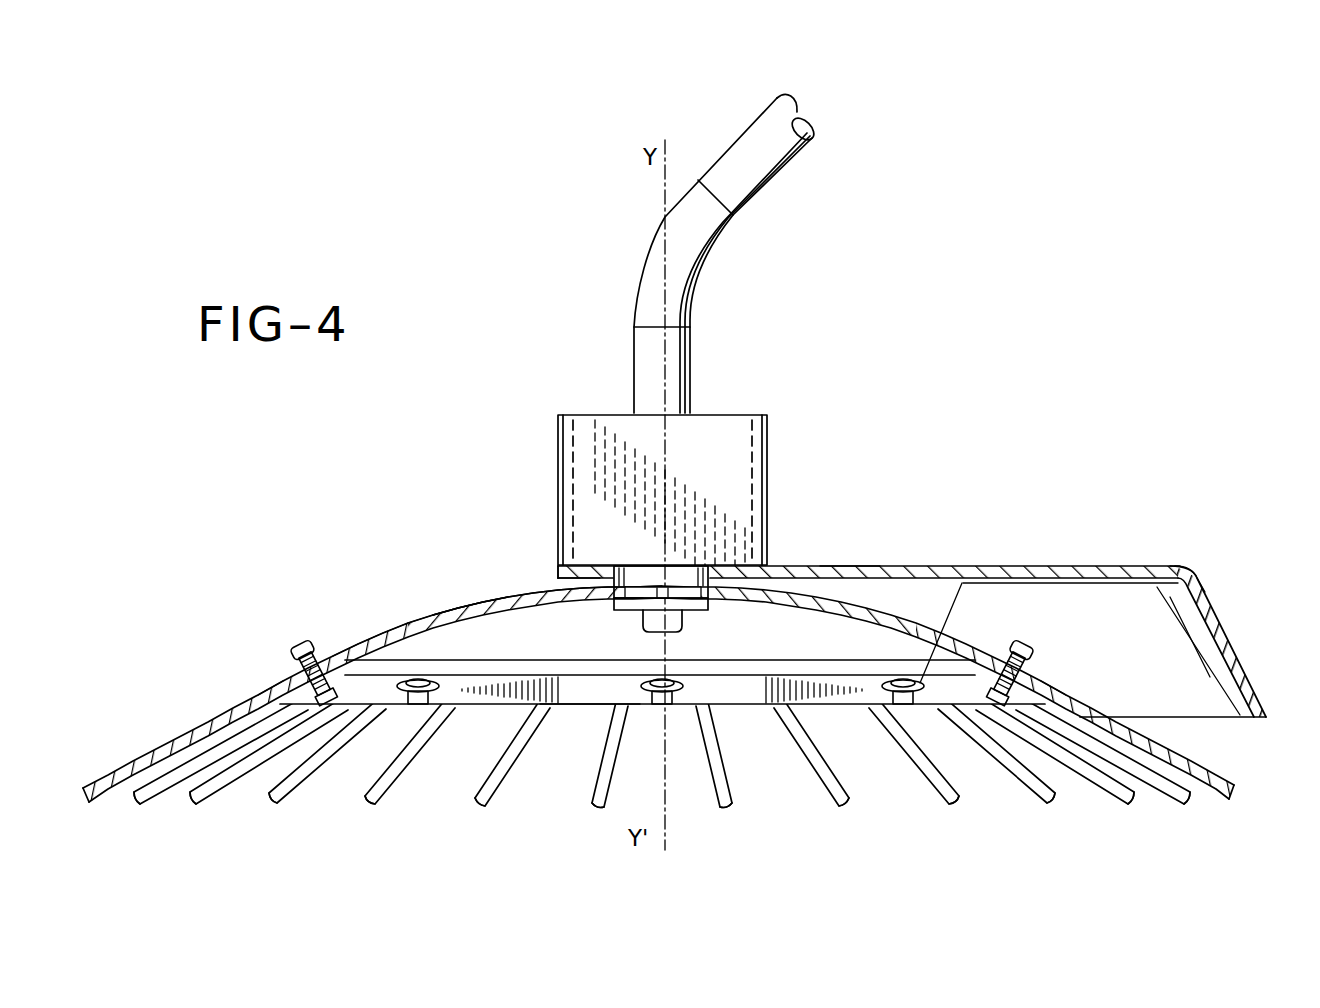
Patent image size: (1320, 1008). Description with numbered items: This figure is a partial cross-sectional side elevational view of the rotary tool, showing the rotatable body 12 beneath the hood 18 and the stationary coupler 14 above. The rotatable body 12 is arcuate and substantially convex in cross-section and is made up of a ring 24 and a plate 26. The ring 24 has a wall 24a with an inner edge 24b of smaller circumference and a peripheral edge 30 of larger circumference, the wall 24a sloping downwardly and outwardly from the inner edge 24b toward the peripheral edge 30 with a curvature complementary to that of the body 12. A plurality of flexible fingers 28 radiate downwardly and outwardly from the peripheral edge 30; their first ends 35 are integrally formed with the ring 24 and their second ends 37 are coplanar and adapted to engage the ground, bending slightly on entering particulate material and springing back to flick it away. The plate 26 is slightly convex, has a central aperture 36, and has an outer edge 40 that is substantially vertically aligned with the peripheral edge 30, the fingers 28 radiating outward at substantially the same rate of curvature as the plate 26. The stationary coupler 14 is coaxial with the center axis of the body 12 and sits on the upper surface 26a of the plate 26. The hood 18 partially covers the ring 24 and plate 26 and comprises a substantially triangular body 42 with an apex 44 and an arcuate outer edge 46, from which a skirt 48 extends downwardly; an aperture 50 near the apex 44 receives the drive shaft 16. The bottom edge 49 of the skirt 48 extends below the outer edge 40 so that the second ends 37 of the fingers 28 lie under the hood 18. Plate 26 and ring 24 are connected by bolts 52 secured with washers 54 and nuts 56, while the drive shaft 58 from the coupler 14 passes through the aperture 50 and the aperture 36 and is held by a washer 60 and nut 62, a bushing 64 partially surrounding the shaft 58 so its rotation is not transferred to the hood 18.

The rotatable body 12 is at (370, 607).
The stationary coupler 14 is at (722, 420).
The drive shaft 16 is at (747, 117).
The hood 18 is at (990, 566).
The ring 24 is at (143, 742).
The wall 24a is at (582, 695).
The inner edge 24b is at (920, 665).
The plate 26 is at (480, 602).
The upper surface 26a is at (463, 605).
The flexible fingers 28 is at (190, 725).
The peripheral edge 30 is at (737, 708).
The first ends 35 is at (545, 708).
The central aperture 36 is at (640, 608).
The second ends 37 is at (83, 795).
The outer edge 40 is at (267, 683).
The body 42 is at (846, 568).
The apex 44 is at (558, 570).
The arcuate outer edge 46 is at (1187, 572).
The skirt 48 is at (1238, 650).
The bottom edge 49 is at (1265, 718).
The aperture 50 is at (612, 568).
The bolts 52 is at (305, 650).
The washers 54 is at (340, 689).
The nuts 56 is at (340, 700).
The drive shaft 58 is at (650, 592).
The washer 60 is at (697, 606).
The nut 62 is at (683, 628).
The bushing 64 is at (680, 590).